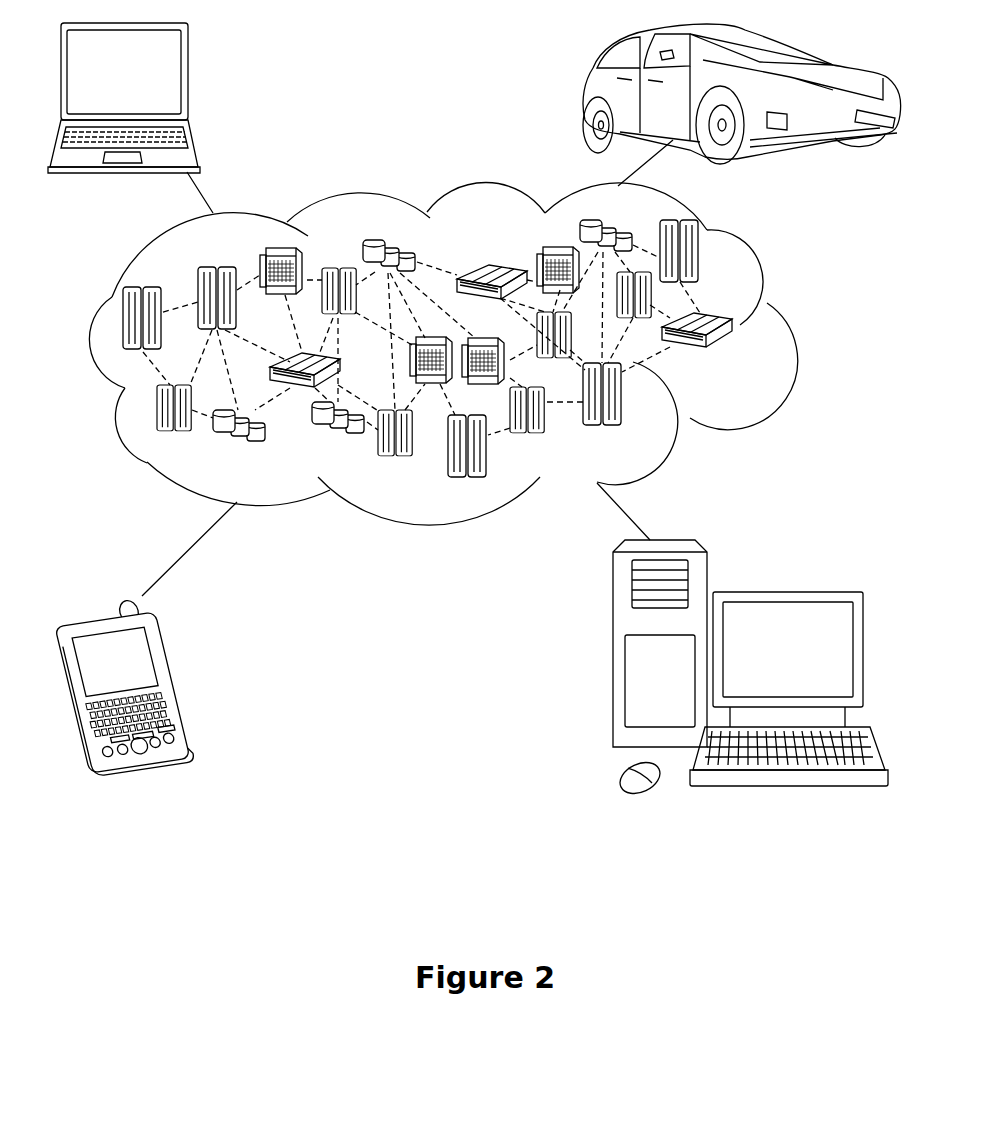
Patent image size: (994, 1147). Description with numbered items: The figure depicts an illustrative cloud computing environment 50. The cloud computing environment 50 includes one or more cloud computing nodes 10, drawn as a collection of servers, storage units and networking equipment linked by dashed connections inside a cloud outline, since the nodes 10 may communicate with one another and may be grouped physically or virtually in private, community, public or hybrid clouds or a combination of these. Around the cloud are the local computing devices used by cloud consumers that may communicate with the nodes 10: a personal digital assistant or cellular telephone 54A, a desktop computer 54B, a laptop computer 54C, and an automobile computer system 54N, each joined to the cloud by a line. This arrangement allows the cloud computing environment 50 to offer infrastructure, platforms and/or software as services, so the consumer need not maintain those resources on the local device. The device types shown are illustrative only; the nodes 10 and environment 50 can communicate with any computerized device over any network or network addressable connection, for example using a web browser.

The cloud computing node 10 is at (463, 353).
The cloud computing environment 50 is at (787, 328).
The personal digital assistant or cellular telephone 54A is at (176, 668).
The desktop computer 54B is at (785, 592).
The laptop computer 54C is at (188, 80).
The automobile computer system 54N is at (585, 97).